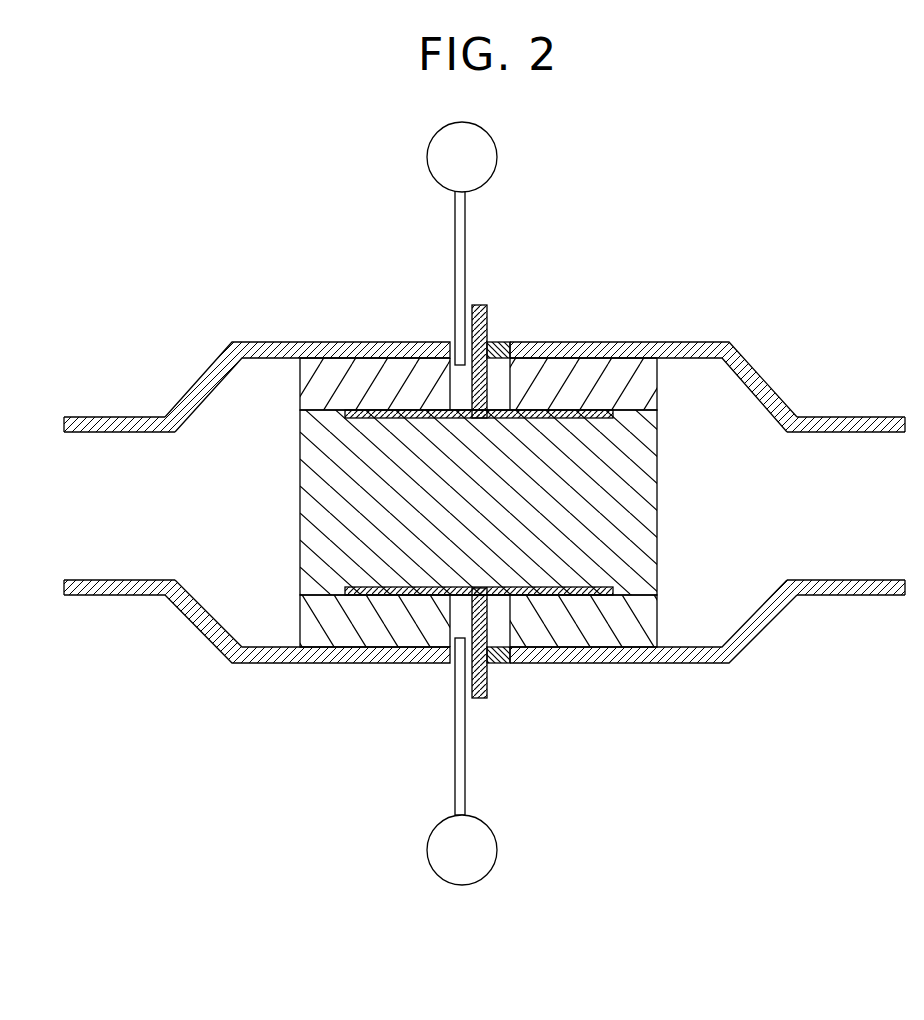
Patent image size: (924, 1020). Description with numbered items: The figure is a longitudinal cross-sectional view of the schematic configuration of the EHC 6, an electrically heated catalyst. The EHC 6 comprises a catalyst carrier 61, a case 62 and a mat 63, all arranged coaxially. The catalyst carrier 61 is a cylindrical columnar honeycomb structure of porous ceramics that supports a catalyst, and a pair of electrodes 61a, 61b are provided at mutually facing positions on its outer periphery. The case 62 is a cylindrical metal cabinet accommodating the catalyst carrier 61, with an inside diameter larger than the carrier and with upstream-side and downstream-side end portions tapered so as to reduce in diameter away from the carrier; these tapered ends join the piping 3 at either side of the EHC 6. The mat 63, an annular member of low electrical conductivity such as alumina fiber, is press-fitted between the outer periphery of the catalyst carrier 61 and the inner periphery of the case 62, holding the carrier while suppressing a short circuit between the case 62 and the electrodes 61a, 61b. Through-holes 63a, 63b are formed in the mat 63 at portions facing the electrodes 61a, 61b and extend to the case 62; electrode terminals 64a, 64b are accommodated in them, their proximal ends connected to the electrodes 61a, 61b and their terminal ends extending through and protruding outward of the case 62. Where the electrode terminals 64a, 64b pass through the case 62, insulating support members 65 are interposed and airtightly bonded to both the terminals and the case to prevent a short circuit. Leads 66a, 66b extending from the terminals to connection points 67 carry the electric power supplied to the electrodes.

The pipe 3 is at (123, 417).
The EHC 6 is at (486, 503).
The catalyst carrier 61 is at (435, 504).
The electrode 61a is at (587, 413).
The electrode 61b is at (383, 592).
The case 62 is at (252, 341).
The mat 63 is at (518, 501).
The through-hole 63a is at (498, 387).
The through-hole 63b is at (497, 620).
The electrode terminal 64a is at (478, 305).
The electrode terminal 64b is at (478, 700).
The support member 65 is at (498, 340).
The upper lead wire 66a is at (455, 262).
The lower lead wire 66b is at (455, 750).
The terminal ball 67 is at (427, 153).